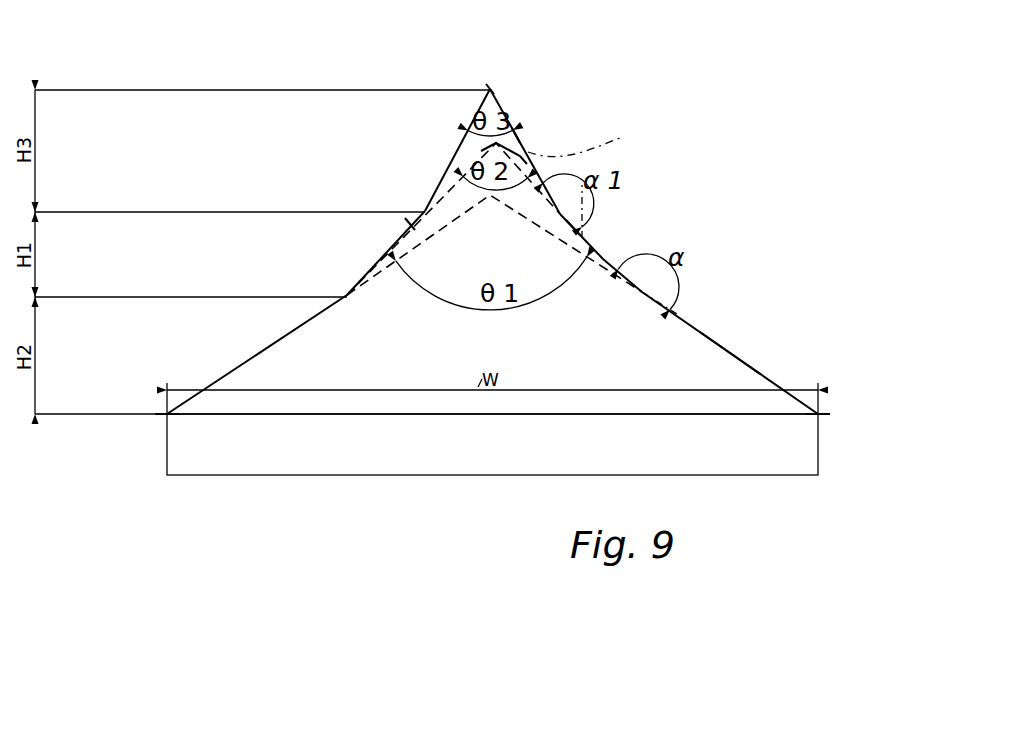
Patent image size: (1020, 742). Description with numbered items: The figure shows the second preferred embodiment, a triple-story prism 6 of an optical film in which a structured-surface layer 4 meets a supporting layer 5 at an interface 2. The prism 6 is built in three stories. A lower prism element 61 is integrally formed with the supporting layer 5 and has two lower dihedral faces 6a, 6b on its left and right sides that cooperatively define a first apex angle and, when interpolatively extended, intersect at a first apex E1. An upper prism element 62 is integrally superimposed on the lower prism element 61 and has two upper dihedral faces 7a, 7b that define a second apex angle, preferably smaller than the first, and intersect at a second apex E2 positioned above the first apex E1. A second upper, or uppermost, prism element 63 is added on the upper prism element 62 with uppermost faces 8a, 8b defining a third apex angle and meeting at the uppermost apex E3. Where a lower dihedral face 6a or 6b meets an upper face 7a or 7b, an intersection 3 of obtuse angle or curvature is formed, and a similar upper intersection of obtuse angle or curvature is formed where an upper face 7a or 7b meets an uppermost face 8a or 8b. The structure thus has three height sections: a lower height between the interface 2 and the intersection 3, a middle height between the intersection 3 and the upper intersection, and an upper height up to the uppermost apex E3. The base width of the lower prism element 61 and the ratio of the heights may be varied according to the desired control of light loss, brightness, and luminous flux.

The interface 2 is at (167, 416).
The intersection 3 is at (345, 292).
The structured-surface layer 4 is at (806, 119).
The supporting layer 5 is at (332, 455).
The prism 6 is at (492, 251).
The lower dihedral face 6a is at (253, 358).
The lower dihedral face 6b is at (692, 326).
The upper dihedral face 7a is at (368, 272).
The upper dihedral face 7b is at (594, 232).
The uppermost face 8a is at (454, 158).
The uppermost face 8b is at (516, 136).
The lower prism element 61 is at (727, 372).
The upper prism element 62 is at (586, 240).
The uppermost prism element 63 is at (515, 141).
The first apex E1 is at (410, 225).
The second apex E2 is at (589, 142).
The uppermost apex E3 is at (490, 89).